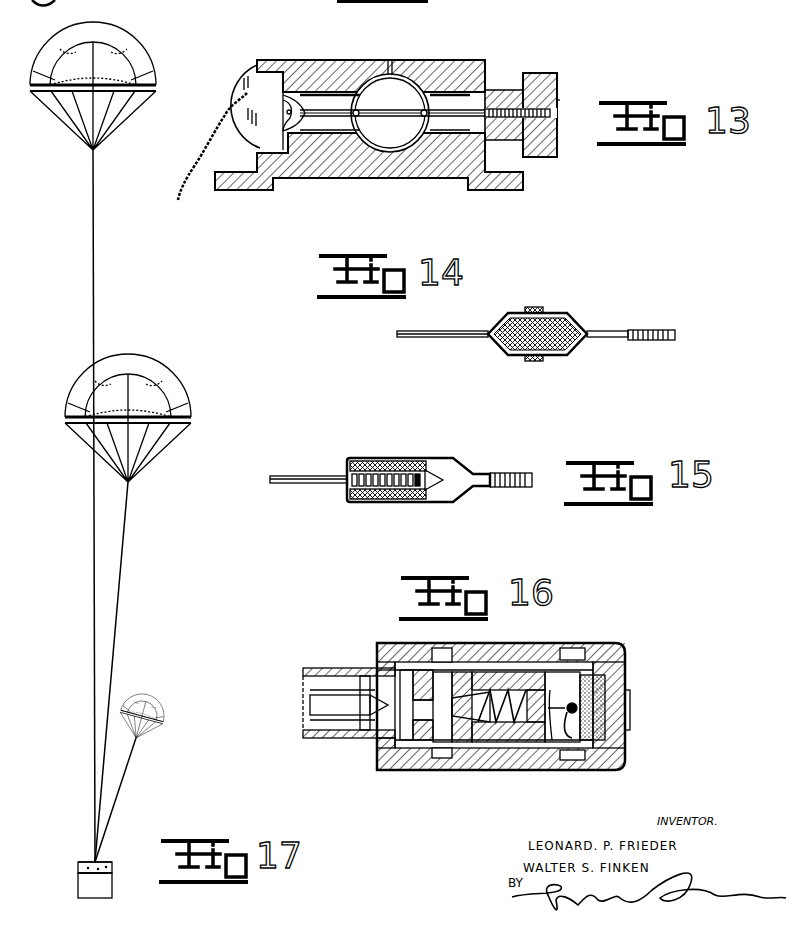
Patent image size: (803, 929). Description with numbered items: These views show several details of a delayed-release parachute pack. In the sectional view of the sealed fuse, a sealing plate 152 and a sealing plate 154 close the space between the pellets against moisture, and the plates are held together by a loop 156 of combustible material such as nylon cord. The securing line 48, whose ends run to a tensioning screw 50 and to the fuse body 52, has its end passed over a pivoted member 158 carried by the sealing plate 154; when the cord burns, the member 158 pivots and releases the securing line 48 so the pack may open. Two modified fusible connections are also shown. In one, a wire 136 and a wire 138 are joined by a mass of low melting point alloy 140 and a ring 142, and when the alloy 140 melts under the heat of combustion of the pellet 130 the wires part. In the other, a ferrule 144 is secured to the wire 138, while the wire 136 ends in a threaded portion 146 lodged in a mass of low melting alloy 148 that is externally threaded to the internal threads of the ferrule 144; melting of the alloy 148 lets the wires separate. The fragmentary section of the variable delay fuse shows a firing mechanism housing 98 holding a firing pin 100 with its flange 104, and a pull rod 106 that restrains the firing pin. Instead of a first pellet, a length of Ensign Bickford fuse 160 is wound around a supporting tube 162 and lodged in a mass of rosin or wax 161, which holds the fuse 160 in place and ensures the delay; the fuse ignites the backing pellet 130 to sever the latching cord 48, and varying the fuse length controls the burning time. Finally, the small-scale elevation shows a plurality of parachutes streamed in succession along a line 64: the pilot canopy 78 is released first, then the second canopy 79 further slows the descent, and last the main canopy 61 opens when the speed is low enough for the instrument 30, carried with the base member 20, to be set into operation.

In FIG. 17, the base member 20 is at (112, 865).
In FIG. 17, the container 30 is at (112, 896).
In FIG. 13, the securing member 48 is at (180, 203).
In FIG. 16, the securing member 48 is at (590, 662).
In FIG. 13, the tensioning screw 50 is at (558, 95).
In FIG. 13, the fuse body 52 is at (335, 180).
In FIG. 16, the fuse body 52 is at (440, 770).
In FIG. 17, the main canopy 61 is at (140, 45).
In FIG. 17, the suspension line 64 is at (92, 545).
In FIG. 17, the pilot canopy 78 is at (163, 714).
In FIG. 17, the second canopy 79 is at (190, 400).
In FIG. 16, the firing mechanism housing 98 is at (330, 740).
In FIG. 16, the firing pin 100 is at (382, 720).
In FIG. 16, the flange 104 is at (365, 680).
In FIG. 16, the pull rod 106 is at (318, 668).
In FIG. 16, the pellet 130 is at (628, 692).
In FIG. 14, the wire 136 is at (573, 318).
In FIG. 15, the wire 136 is at (300, 476).
In FIG. 14, the wire 138 is at (562, 358).
In FIG. 15, the wire 138 is at (490, 476).
In FIG. 14, the low melting point alloy 140 is at (517, 313).
In FIG. 14, the ring 142 is at (535, 307).
In FIG. 15, the ferrule 144 is at (425, 458).
In FIG. 15, the threaded portion 146 is at (360, 470).
In FIG. 15, the low melting alloy 148 is at (388, 462).
In FIG. 13, the sealing plate 152 is at (296, 75).
In FIG. 13, the sealing plate 154 is at (498, 85).
In FIG. 13, the loop 156 is at (400, 112).
In FIG. 13, the pivoted member 158 is at (237, 80).
In FIG. 16, the fuse 160 is at (465, 745).
In FIG. 16, the rosin or wax 161 is at (505, 745).
In FIG. 16, the supporting tube 162 is at (535, 745).